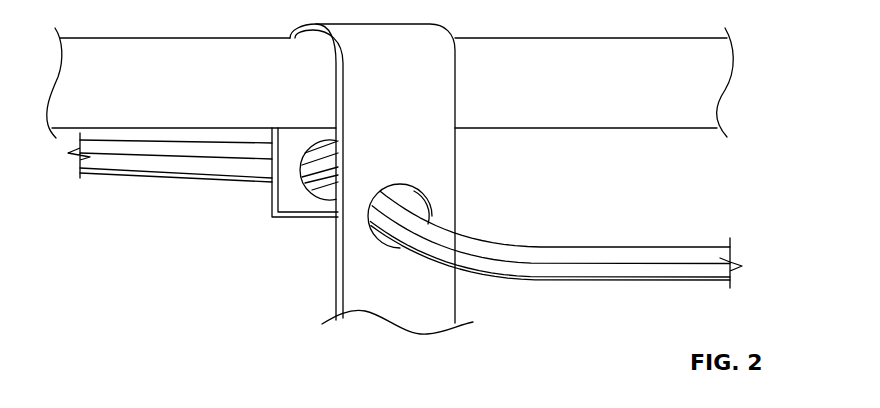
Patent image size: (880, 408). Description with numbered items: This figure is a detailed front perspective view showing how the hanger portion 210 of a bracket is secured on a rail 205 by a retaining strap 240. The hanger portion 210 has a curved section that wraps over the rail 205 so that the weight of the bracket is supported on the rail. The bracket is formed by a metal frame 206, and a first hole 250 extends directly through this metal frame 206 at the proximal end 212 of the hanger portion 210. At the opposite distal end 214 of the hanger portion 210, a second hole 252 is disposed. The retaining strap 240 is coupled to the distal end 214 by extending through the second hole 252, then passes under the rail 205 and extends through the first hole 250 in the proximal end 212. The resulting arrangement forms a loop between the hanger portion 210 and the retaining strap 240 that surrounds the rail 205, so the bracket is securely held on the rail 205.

The rail 205 is at (395, 99).
The hanger portion 210 is at (478, 98).
The proximal end 212 is at (437, 179).
The metal frame 206 is at (432, 292).
The distal end 214 is at (203, 210).
The second hole 252 is at (300, 183).
The first hole 250 is at (392, 249).
The retaining strap 240 is at (601, 262).